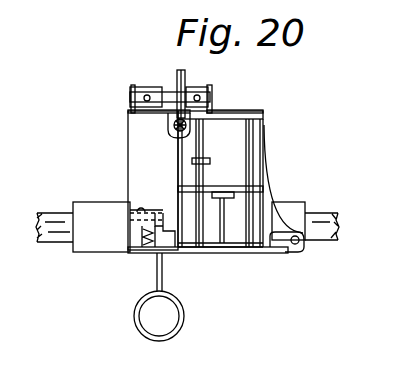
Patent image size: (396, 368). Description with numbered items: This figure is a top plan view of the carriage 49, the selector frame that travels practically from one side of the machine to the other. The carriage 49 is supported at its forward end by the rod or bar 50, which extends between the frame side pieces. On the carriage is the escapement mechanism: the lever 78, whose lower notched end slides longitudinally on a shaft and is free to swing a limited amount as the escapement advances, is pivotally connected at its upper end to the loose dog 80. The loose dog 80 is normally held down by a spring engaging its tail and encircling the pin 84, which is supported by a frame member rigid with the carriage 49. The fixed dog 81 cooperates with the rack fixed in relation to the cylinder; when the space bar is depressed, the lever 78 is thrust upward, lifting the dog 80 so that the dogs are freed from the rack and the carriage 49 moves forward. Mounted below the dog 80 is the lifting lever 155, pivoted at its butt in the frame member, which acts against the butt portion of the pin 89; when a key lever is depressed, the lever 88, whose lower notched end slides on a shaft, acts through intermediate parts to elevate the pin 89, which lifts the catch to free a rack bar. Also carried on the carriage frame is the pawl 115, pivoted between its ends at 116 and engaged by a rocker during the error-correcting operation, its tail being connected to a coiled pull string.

The rod or bar 50 is at (52, 213).
The pawl 115 is at (186, 73).
The pivot of the pawl 116 is at (212, 96).
The pin 89 is at (172, 137).
The lifting lever 155 is at (177, 162).
The carriage 49 is at (270, 157).
The lever 88 is at (211, 161).
The lever 78 is at (224, 198).
The fixed dog 81 is at (165, 245).
The loose dog 80 is at (220, 253).
The pin 84 is at (297, 245).